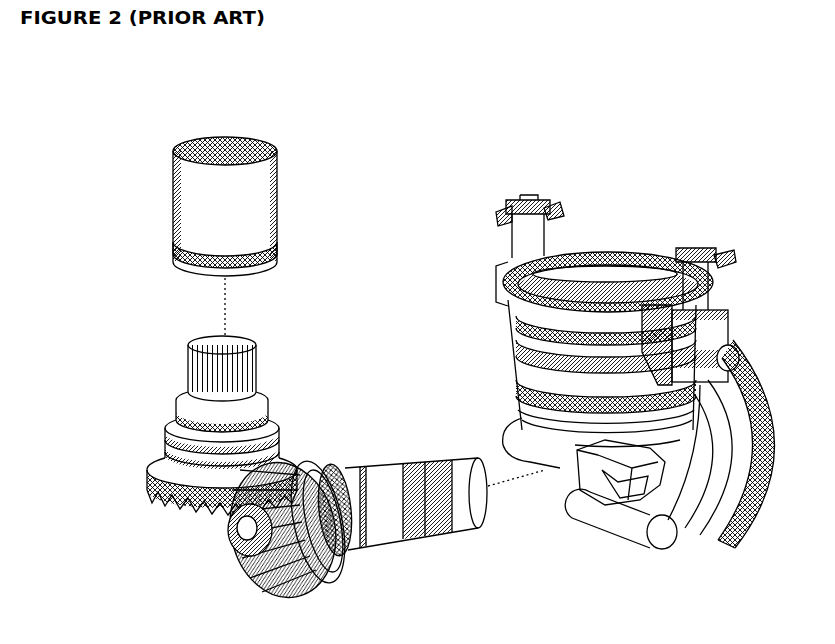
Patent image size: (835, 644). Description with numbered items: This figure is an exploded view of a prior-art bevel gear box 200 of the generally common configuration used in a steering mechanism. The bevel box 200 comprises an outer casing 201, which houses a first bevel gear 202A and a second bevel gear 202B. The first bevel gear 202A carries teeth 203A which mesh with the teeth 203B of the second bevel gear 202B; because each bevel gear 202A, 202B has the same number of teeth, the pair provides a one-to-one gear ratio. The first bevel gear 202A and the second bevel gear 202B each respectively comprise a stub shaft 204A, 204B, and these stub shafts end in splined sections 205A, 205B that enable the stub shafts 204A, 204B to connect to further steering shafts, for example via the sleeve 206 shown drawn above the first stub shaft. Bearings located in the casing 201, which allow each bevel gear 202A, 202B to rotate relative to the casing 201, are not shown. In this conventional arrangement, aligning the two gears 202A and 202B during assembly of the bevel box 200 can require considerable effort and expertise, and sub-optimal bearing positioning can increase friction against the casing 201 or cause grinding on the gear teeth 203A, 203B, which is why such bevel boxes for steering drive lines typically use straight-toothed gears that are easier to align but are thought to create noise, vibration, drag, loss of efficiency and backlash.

The bevel gear box 200 is at (605, 381).
The outer casing 201 is at (585, 510).
The first bevel gear 202A is at (240, 383).
The second bevel gear 202B is at (211, 542).
The teeth 203A is at (163, 500).
The teeth 203B is at (214, 546).
The stub shaft 204A is at (286, 385).
The stub shaft 204B is at (429, 437).
The splined section 205A is at (262, 360).
The splined section 205B is at (425, 481).
The sleeve 206 is at (287, 232).